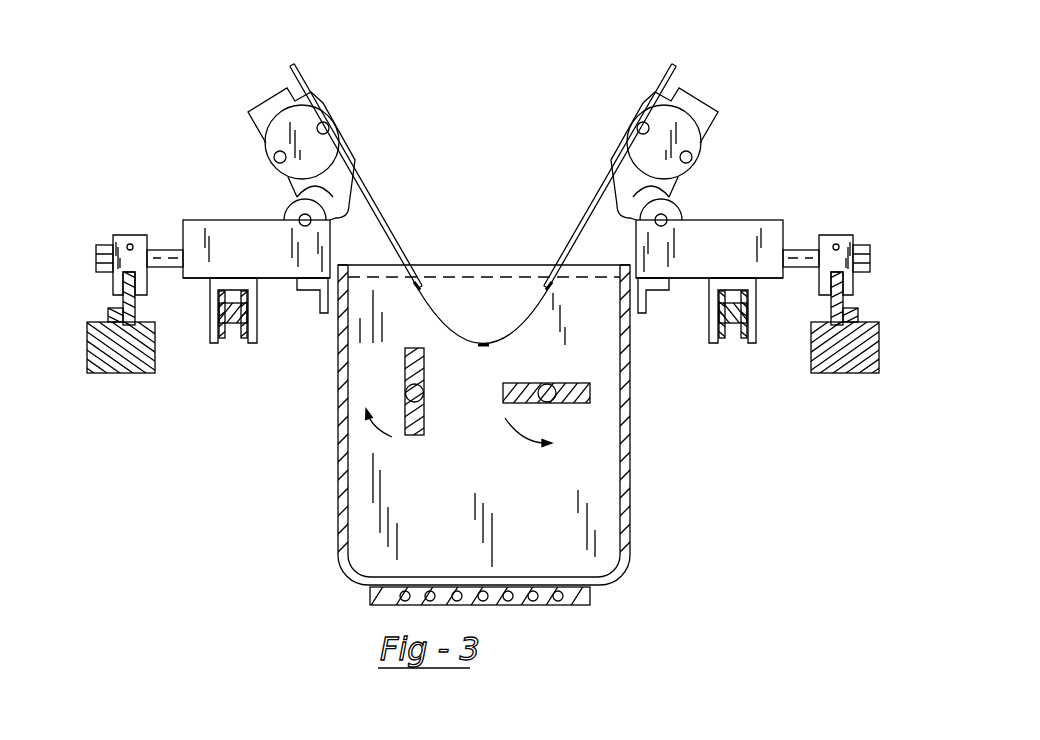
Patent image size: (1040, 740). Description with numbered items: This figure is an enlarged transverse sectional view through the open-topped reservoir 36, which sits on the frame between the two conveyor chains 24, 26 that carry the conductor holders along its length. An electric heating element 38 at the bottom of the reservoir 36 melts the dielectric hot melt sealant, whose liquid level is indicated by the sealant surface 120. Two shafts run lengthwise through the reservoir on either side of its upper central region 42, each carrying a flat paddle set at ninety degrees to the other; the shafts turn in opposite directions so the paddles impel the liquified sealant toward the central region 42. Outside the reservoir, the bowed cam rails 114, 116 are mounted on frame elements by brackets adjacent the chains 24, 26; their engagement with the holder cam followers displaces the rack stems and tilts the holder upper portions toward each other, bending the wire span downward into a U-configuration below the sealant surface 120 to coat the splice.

The conveyor chain 24 is at (732, 328).
The conveyor chain 26 is at (228, 328).
The reservoir 36 is at (630, 518).
The electric heating element 38 is at (380, 605).
The upper central region of the reservoir 42 is at (487, 347).
The cam rail 114 is at (848, 288).
The cam rail 116 is at (130, 290).
The sealant surface 120 is at (460, 272).